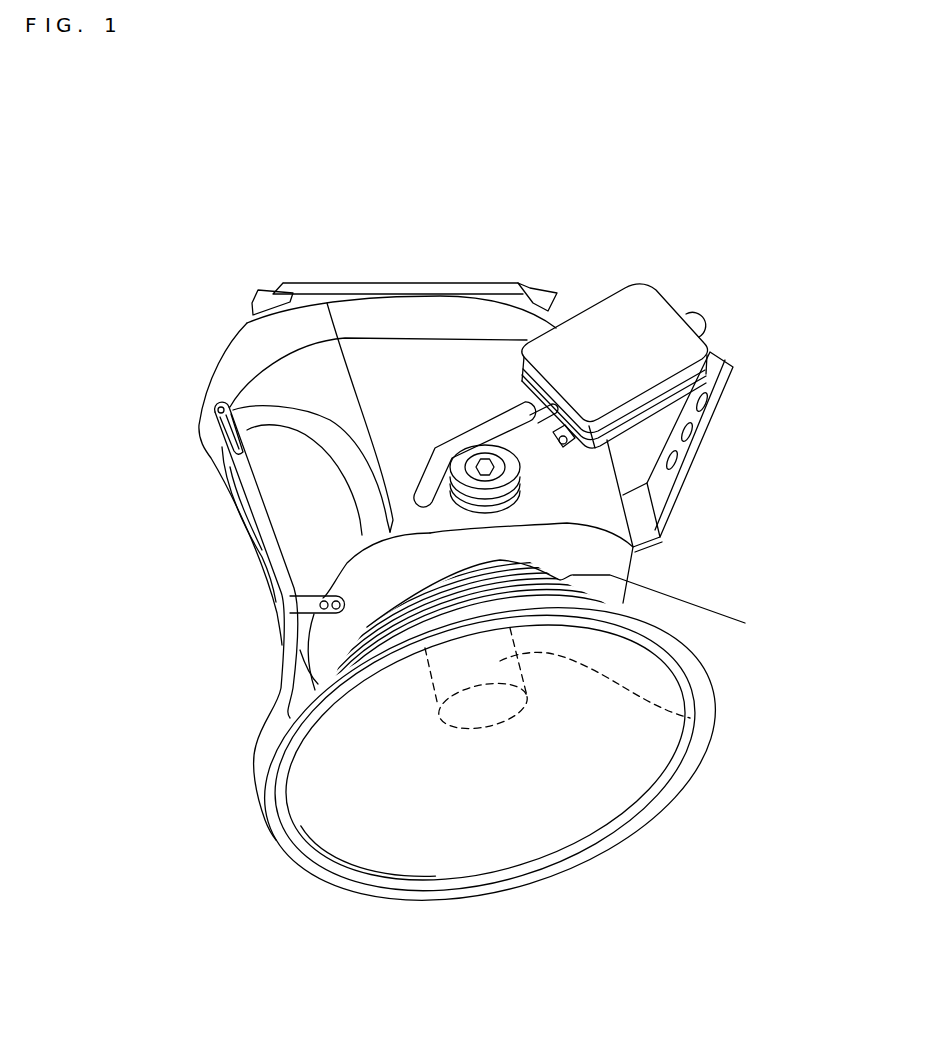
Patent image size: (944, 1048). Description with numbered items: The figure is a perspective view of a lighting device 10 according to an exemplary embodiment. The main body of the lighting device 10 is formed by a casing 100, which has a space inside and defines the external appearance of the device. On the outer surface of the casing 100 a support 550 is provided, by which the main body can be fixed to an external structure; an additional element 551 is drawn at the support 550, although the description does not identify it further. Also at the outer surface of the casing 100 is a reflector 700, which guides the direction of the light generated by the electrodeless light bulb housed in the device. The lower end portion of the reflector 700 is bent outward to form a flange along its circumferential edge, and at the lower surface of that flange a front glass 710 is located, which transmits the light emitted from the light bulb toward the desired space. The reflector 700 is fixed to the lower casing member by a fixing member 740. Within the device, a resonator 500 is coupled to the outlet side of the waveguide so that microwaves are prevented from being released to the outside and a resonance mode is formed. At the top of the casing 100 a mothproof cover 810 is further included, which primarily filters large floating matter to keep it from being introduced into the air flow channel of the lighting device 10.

The lighting device 10 is at (131, 174).
The casing 100 is at (184, 444).
The resonator 500 is at (690, 718).
The support 550 is at (713, 388).
The fixing bolt 551 is at (510, 462).
The reflector 700 is at (745, 623).
The front glass 710 is at (630, 777).
The fixing member 740 is at (289, 626).
The mothproof cover 810 is at (283, 283).